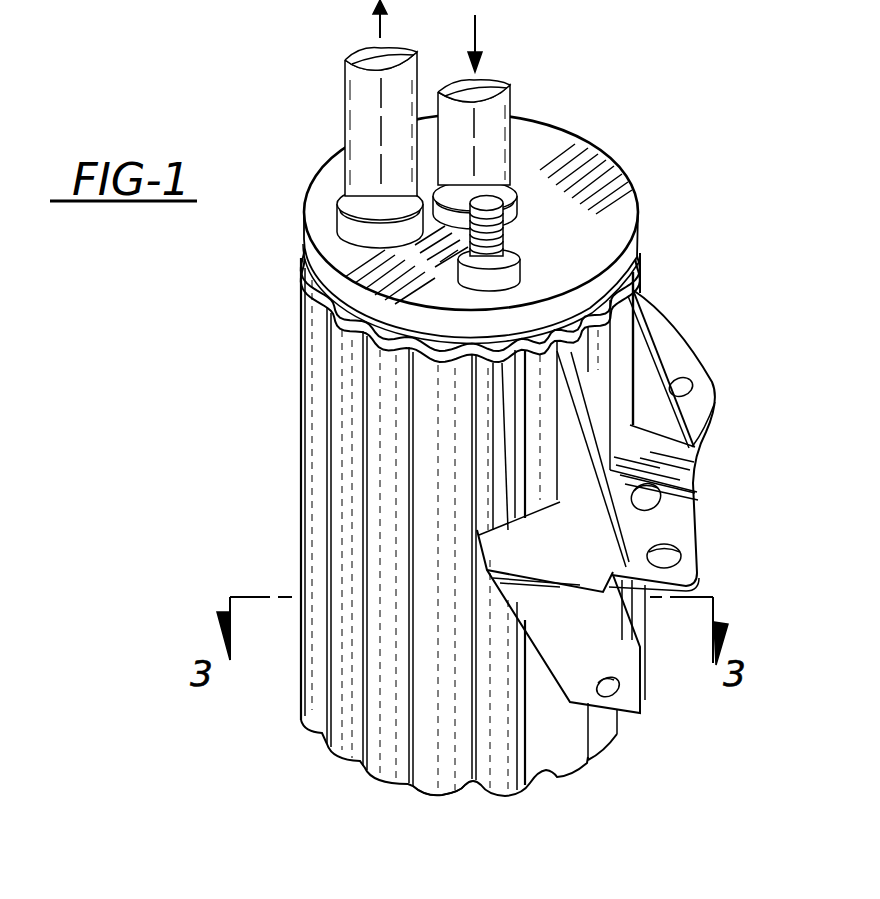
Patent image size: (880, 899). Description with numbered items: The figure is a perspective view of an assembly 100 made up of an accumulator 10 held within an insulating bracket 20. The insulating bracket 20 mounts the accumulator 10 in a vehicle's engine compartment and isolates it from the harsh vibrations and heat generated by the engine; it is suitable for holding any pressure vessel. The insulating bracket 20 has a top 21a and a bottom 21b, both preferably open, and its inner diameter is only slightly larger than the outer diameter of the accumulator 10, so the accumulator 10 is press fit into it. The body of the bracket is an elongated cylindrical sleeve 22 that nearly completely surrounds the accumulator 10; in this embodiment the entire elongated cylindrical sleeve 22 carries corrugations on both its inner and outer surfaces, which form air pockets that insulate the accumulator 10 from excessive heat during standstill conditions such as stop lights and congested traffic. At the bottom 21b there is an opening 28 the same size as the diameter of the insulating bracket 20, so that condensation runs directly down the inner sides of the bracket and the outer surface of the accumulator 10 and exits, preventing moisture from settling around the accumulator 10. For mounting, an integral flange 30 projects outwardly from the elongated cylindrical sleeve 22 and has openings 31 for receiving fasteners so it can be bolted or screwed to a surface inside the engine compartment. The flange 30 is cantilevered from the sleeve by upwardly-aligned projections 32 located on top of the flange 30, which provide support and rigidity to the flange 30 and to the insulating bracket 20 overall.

The assembly 100 is at (275, 106).
The accumulator 10 is at (598, 170).
The insulating bracket 20 is at (262, 421).
The top 21a is at (302, 291).
The bottom 21b is at (322, 764).
The elongated cylindrical sleeve 22 is at (300, 503).
The opening 28 is at (430, 806).
The flange 30 is at (731, 409).
The openings 31 is at (688, 385).
The upwardly-aligned projections 32 is at (650, 358).